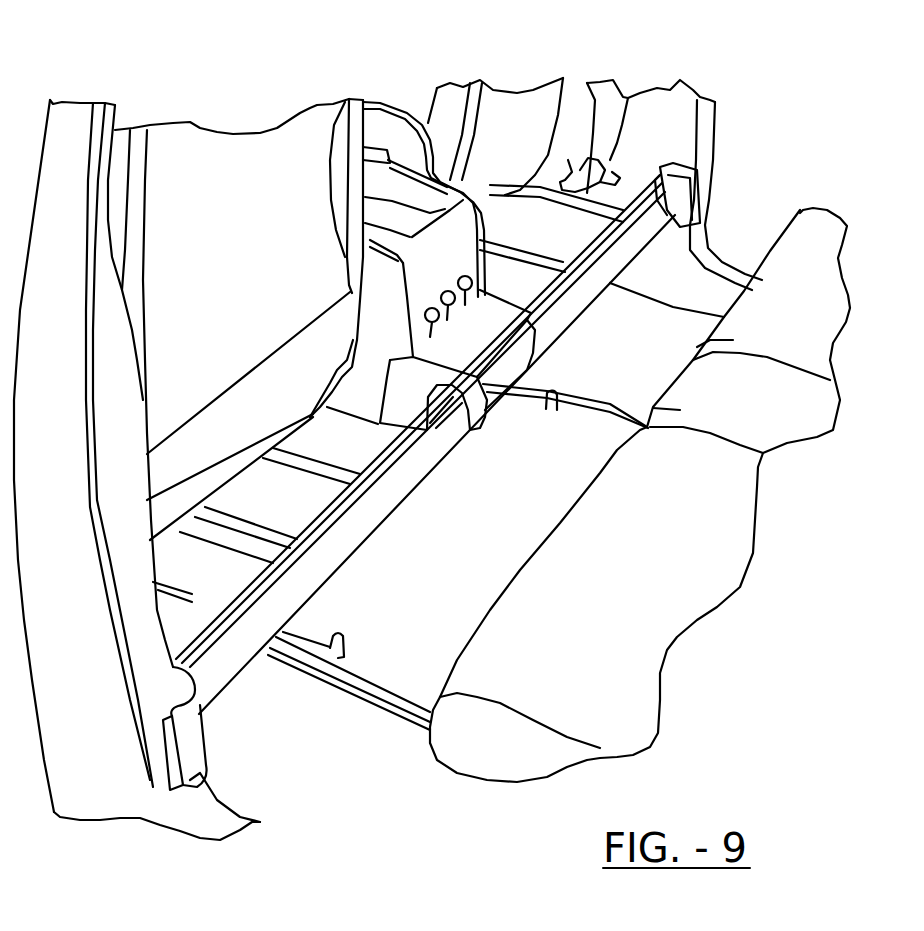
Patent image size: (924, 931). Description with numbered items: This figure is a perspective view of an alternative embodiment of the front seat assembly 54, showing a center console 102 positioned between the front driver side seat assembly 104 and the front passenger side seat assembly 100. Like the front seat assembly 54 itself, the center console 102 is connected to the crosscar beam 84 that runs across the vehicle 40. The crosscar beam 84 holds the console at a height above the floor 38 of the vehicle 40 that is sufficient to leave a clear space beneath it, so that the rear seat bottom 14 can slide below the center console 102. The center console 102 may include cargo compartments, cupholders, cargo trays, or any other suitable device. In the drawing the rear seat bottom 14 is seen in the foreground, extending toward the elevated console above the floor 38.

The front driver side seat assembly 104 is at (222, 102).
The front seat assembly 54 is at (350, 70).
The front passenger side seat assembly 100 is at (534, 62).
The vehicle 40 is at (677, 132).
The rear seat bottom 14 is at (820, 276).
The center console 102 is at (490, 333).
The crosscar beam 84 is at (397, 485).
The floor 38 is at (333, 756).